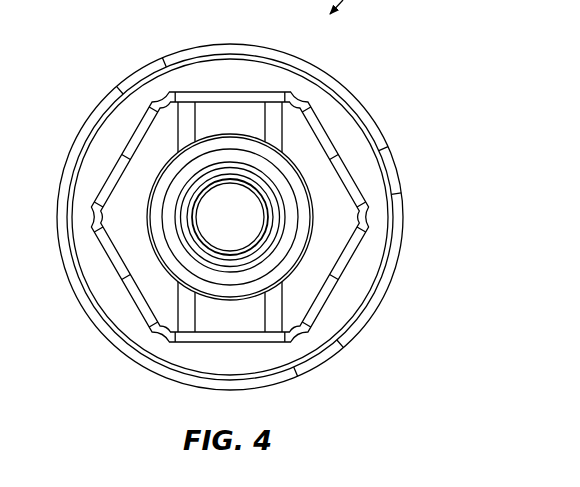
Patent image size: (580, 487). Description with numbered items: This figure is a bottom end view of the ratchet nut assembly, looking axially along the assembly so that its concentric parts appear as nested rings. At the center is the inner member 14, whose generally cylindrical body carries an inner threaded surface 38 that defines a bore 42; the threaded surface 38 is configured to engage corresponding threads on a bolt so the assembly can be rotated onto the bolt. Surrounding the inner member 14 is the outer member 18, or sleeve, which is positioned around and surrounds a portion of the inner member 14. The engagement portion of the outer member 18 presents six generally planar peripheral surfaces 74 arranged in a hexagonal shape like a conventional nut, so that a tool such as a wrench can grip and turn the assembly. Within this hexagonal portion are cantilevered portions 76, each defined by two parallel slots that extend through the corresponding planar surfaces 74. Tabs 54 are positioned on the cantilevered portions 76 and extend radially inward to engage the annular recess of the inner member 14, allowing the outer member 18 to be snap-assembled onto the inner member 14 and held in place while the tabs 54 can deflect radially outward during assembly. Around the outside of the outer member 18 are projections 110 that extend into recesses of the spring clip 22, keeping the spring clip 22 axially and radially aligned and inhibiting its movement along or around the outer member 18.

The spring clip 22 is at (343, 84).
The projections 110 is at (143, 73).
The outer member 18 is at (358, 284).
The planar peripheral surfaces 74 is at (125, 162).
The cantilevered portions 76 is at (207, 100).
The tabs 54 is at (252, 112).
The inner member 14 is at (170, 207).
The inner threaded surface 38 is at (195, 237).
The bore 42 is at (228, 208).